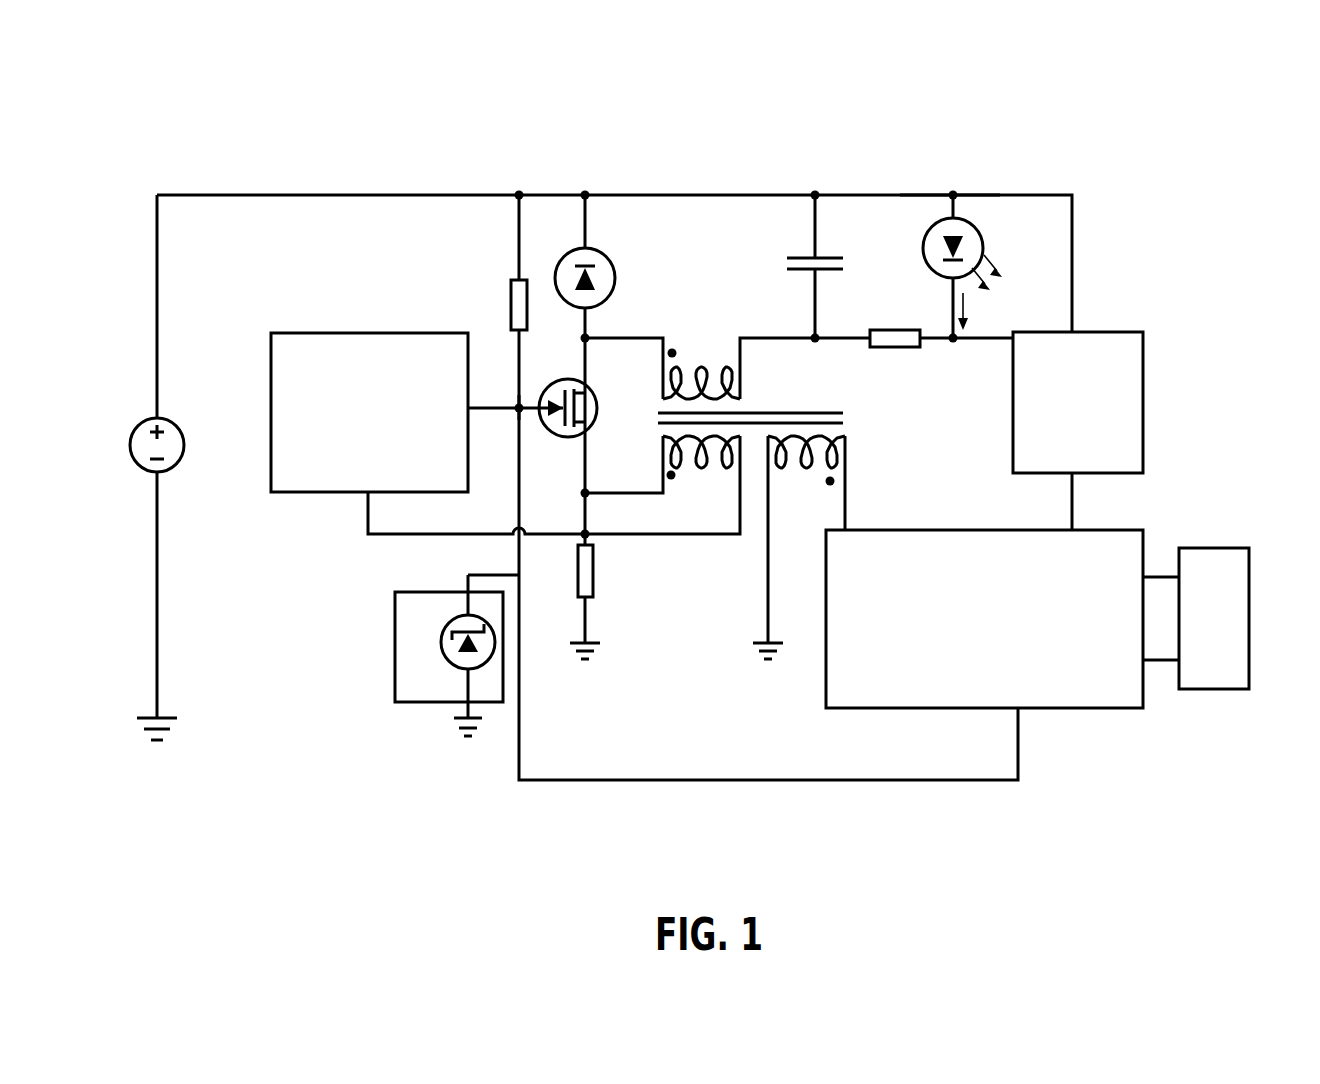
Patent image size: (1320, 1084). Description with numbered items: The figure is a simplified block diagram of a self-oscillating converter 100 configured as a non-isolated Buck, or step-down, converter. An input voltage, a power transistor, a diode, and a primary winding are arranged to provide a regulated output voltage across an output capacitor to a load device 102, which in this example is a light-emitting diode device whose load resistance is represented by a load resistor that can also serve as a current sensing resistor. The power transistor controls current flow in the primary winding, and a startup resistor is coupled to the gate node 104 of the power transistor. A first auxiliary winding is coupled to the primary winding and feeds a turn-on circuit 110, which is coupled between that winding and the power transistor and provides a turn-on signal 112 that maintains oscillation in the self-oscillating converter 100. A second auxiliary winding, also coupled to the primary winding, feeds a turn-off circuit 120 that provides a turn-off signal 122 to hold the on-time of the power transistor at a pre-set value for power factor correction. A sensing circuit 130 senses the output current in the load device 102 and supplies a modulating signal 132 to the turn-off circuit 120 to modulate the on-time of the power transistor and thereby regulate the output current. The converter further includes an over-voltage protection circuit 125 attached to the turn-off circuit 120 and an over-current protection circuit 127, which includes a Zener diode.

The self-oscillating converter 100 is at (1178, 90).
The load device 102 is at (933, 182).
The gate node 104 is at (521, 403).
The turn-on circuit 110 is at (369, 412).
The turn-on signal 112 is at (479, 405).
The turn-off circuit 120 is at (984, 619).
The turn-off signal 122 is at (522, 476).
The over-voltage protection circuit 125 is at (1196, 618).
The over-current protection circuit 127 is at (395, 600).
The sensing circuit 130 is at (1078, 402).
The modulating signal 132 is at (1075, 516).